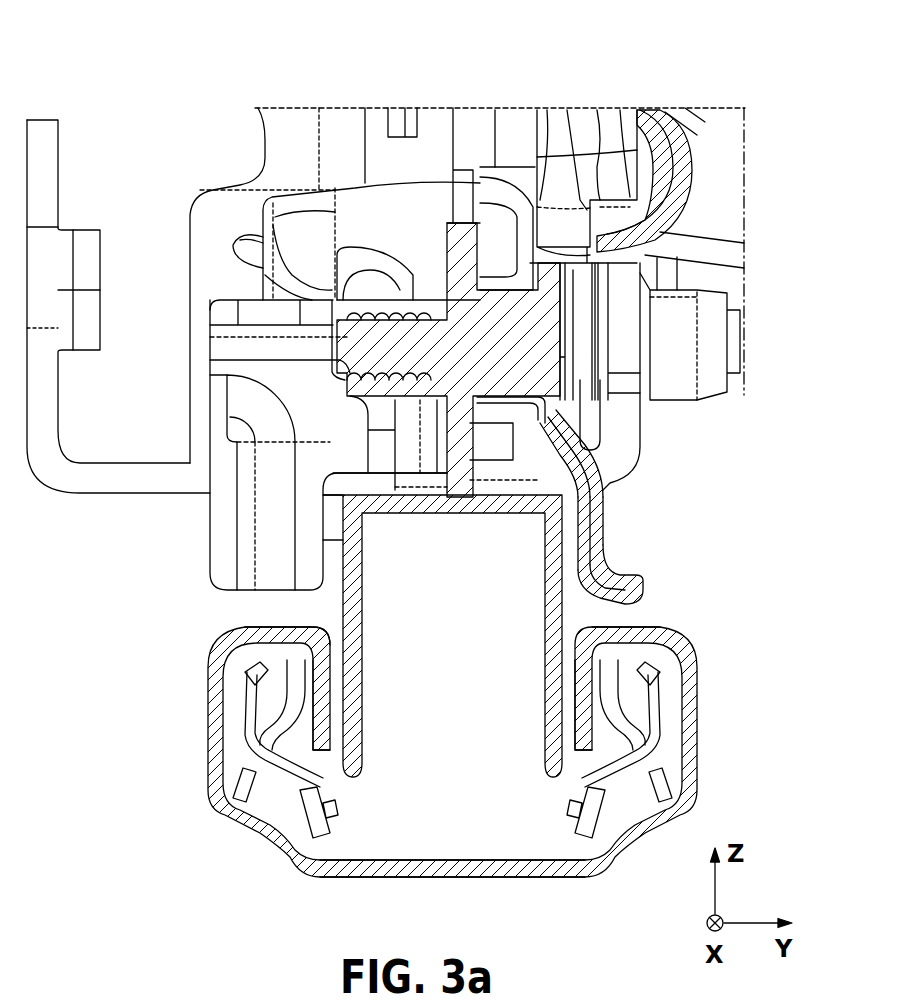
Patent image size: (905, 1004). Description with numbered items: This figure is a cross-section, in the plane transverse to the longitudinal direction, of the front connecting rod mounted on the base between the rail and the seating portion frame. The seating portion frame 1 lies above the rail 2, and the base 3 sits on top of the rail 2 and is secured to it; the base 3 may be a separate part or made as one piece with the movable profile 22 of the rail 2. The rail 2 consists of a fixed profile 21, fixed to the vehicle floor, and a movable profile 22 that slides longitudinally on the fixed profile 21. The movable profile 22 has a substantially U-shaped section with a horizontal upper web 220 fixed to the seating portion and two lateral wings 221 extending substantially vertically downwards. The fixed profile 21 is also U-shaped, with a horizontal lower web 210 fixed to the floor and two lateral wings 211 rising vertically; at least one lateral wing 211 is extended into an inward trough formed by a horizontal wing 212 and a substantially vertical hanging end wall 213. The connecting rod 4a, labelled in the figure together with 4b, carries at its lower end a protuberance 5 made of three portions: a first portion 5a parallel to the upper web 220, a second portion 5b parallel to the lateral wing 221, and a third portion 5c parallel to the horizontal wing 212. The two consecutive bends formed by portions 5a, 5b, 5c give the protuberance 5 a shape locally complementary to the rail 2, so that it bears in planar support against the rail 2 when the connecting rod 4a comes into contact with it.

The frame 1 is at (720, 208).
The rail 2 is at (494, 686).
The base 3 is at (457, 267).
The connecting rod 4a is at (513, 140).
The hose line 4b is at (631, 142).
The protuberance 5 is at (628, 500).
The first portion 5a is at (572, 483).
The second portion 5b is at (587, 540).
The third portion 5c is at (657, 574).
The fixed profile 21 is at (543, 686).
The horizontal lower web 210 is at (520, 860).
The lateral wings 211 is at (683, 727).
The horizontal wing 212 is at (635, 633).
The hanging end wall 213 is at (587, 675).
The movable profile 22 is at (284, 456).
The horizontal upper web 220 is at (335, 498).
The lateral wings 221 is at (335, 612).